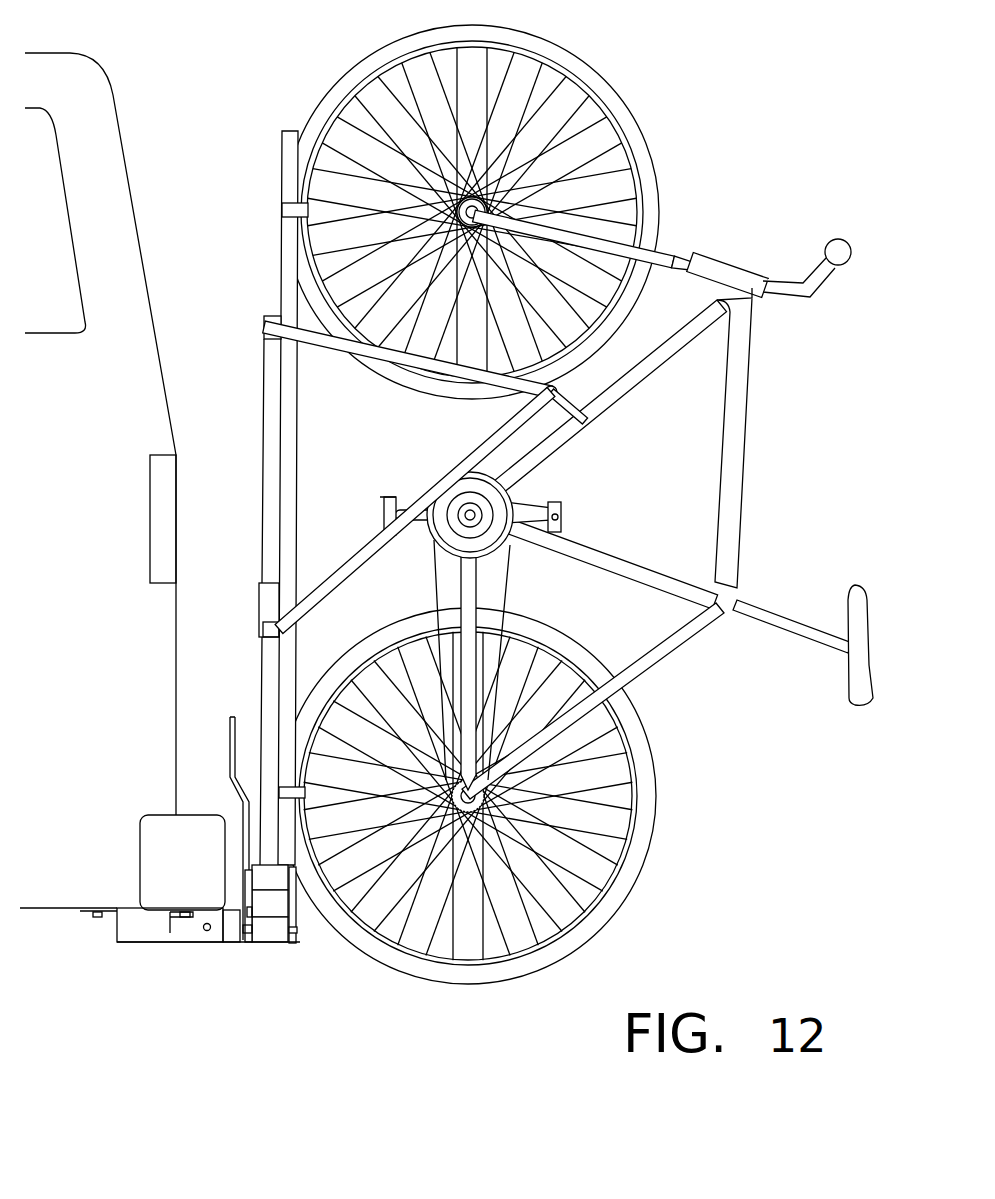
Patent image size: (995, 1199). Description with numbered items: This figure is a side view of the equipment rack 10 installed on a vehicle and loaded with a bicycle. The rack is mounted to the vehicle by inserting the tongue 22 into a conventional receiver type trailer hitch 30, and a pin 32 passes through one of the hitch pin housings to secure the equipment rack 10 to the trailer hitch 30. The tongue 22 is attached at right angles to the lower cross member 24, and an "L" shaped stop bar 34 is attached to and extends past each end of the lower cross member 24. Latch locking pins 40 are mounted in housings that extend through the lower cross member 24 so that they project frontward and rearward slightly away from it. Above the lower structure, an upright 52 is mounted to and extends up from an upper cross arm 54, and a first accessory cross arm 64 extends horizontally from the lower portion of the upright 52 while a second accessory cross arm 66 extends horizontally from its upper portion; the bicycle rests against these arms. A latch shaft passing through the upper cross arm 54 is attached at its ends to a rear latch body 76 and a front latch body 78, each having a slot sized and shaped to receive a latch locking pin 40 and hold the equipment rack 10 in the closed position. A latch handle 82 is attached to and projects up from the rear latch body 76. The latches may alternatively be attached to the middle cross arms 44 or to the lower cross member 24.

The equipment rack 10 is at (237, 280).
The tongue 22 is at (230, 932).
The lower cross member 24 is at (270, 925).
The trailer hitch 30 is at (135, 935).
The pin 32 is at (205, 931).
The stop bar 34 is at (265, 940).
The latch locking pin 40 is at (297, 930).
The middle cross arm 44 is at (262, 898).
The upright 52 is at (268, 484).
The upper cross arm 54 is at (270, 870).
The first accessory cross arm 64 is at (264, 624).
The second accessory cross arm 66 is at (264, 328).
The rear latch body 76 is at (243, 945).
The front latch body 78 is at (297, 943).
The latch handle 82 is at (230, 757).